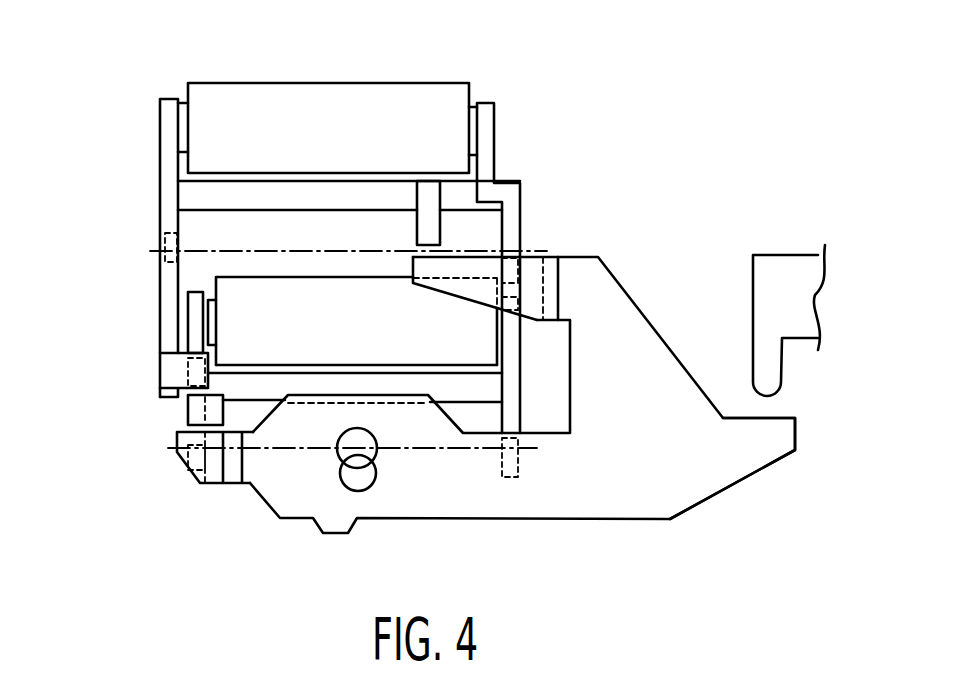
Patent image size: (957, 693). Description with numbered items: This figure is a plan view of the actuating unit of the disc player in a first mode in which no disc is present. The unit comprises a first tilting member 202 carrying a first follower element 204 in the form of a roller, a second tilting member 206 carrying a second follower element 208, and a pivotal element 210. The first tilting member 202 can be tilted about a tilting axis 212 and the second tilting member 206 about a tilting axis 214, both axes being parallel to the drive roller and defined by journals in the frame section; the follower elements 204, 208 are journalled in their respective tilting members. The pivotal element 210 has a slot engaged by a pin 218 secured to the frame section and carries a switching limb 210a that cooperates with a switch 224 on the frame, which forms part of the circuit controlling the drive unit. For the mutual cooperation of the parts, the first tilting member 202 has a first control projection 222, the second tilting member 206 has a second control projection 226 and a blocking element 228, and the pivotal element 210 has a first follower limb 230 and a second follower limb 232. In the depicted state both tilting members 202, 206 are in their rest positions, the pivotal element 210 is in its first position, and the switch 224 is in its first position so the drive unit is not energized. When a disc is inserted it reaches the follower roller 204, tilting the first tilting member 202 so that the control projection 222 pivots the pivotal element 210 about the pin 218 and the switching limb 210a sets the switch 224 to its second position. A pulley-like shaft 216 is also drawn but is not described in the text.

The second follower element 208 is at (450, 100).
The second tilting member 206 is at (487, 147).
The second control projection 226 is at (433, 232).
The second follower limb 232 is at (482, 268).
The tilting axis 214 is at (190, 243).
The first follower element 204 is at (223, 285).
The first tilting member 202 is at (197, 338).
The blocking element 228 is at (170, 373).
The first control projection 222 is at (195, 415).
The first follower limb 230 is at (218, 477).
The pivotal element 210 is at (592, 505).
The switching limb 210a is at (755, 458).
The tilting axis 212 is at (443, 448).
The upper shaft 216 is at (373, 450).
The pin 218 is at (345, 482).
The switch 224 is at (770, 262).